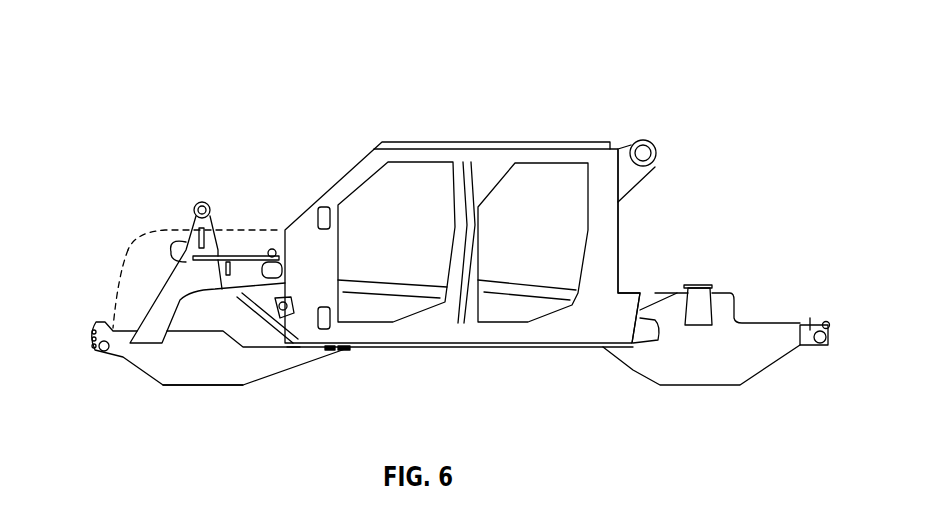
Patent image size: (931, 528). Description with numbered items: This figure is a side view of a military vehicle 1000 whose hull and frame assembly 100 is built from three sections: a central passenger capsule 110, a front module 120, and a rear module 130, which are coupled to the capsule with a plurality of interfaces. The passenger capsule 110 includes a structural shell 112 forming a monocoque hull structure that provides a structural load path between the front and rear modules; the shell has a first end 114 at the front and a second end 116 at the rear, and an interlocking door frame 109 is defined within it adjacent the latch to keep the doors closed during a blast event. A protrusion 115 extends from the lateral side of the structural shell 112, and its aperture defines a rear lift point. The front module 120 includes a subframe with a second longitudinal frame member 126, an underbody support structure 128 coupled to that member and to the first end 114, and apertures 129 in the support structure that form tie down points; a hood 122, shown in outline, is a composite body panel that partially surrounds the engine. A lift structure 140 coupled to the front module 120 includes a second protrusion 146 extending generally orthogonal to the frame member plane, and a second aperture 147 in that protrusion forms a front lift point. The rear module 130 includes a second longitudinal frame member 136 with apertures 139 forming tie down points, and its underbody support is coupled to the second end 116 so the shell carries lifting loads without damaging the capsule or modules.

The military vehicle 1000 is at (218, 72).
The hull and frame assembly 100 is at (492, 145).
The structural shell 112 is at (407, 155).
The interlocking door frame 109 is at (468, 245).
The second end 116 is at (632, 220).
The protrusions 115 is at (648, 120).
The first end 114 is at (280, 238).
The passenger capsule 110 is at (482, 386).
The lift structure 140 is at (230, 211).
The second aperture 147 is at (200, 204).
The second protrusion 146 is at (178, 220).
The hood 122 is at (122, 282).
The second longitudinal frame member 126 is at (165, 282).
The front module 120 is at (245, 405).
The apertures 129 is at (89, 354).
The underbody support structure 128 is at (202, 388).
The rear module 130 is at (692, 404).
The second longitudinal frame member 136 is at (768, 318).
The apertures 139 is at (824, 314).